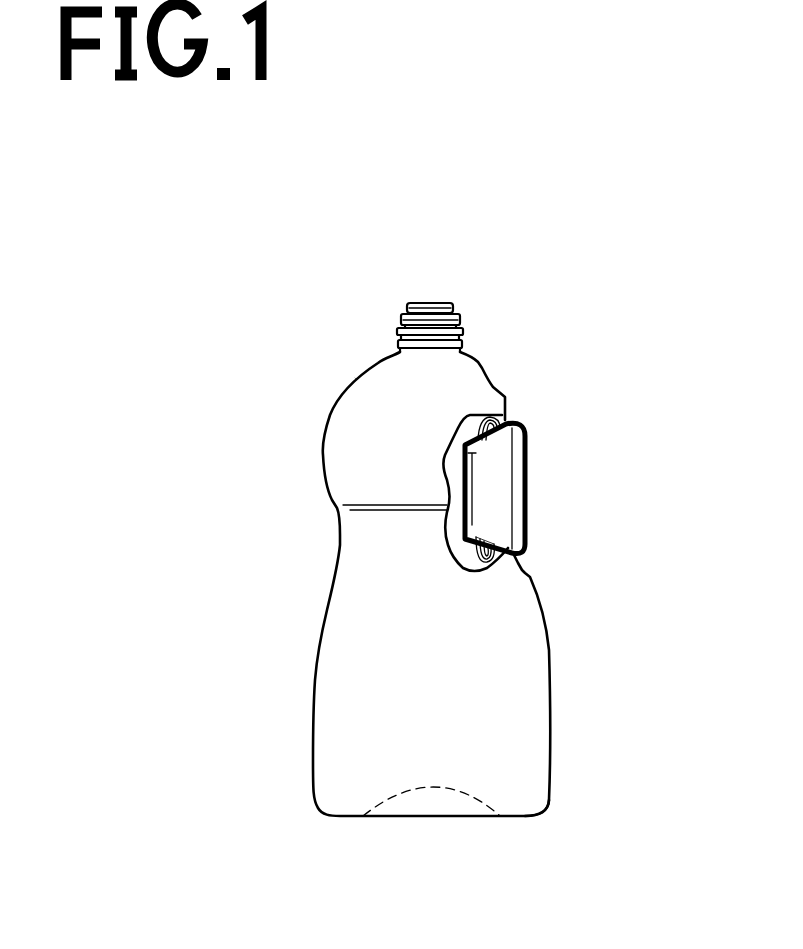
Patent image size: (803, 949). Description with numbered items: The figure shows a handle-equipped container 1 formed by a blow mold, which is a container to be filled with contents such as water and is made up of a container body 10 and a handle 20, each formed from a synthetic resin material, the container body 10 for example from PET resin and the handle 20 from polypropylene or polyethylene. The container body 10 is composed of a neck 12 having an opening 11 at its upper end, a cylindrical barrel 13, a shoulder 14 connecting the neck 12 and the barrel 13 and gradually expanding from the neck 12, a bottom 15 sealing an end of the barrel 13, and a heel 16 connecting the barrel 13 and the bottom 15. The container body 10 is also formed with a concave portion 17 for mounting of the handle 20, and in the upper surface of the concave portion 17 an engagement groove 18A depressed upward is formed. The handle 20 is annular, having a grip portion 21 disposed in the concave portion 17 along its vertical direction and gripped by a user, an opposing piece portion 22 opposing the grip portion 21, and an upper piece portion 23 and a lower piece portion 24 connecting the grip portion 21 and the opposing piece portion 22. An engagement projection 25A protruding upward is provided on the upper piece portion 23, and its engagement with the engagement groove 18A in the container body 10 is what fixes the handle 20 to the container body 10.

The handle-equipped container 1 is at (555, 234).
The container body 10 is at (272, 373).
The opening 11 is at (446, 292).
The neck 12 is at (405, 313).
The barrel 13 is at (330, 657).
The shoulder 14 is at (365, 393).
The bottom 15 is at (435, 808).
The heel 16 is at (545, 806).
The concave portion 17 is at (470, 458).
The handle 20 is at (567, 421).
The grip portion 21 is at (527, 515).
The opposing piece portion 22 is at (473, 490).
The upper piece portion 23 is at (507, 424).
The lower piece portion 24 is at (495, 545).
The engagement projection 25A is at (485, 420).
The engagement groove 18A is at (488, 486).